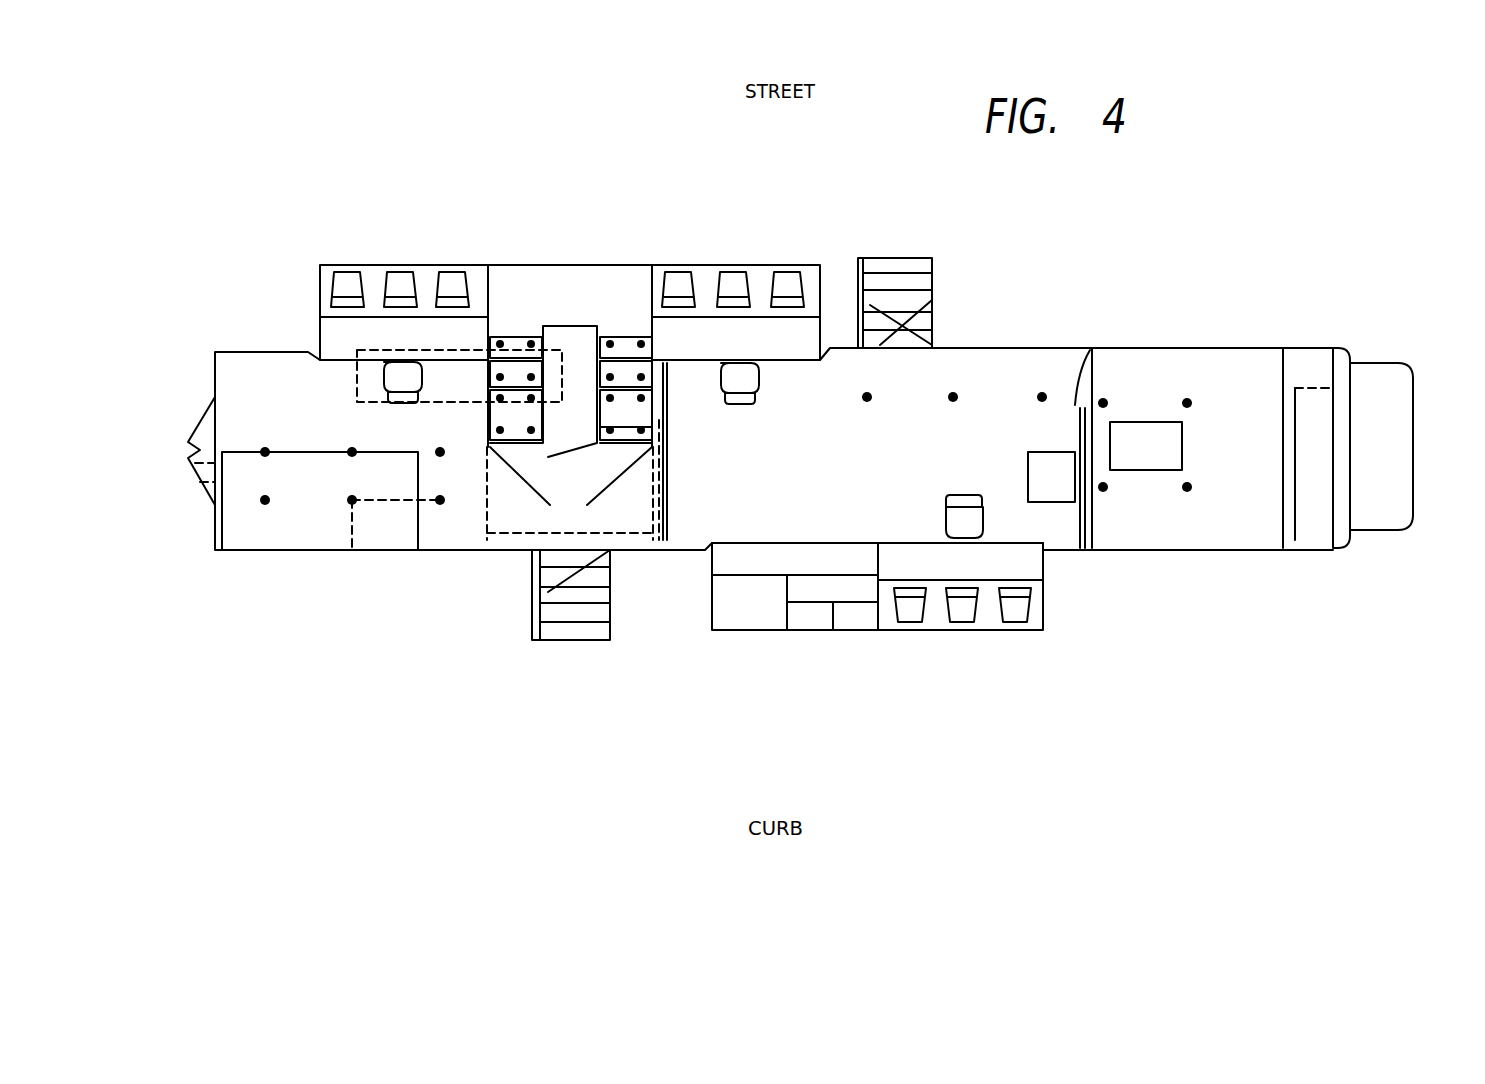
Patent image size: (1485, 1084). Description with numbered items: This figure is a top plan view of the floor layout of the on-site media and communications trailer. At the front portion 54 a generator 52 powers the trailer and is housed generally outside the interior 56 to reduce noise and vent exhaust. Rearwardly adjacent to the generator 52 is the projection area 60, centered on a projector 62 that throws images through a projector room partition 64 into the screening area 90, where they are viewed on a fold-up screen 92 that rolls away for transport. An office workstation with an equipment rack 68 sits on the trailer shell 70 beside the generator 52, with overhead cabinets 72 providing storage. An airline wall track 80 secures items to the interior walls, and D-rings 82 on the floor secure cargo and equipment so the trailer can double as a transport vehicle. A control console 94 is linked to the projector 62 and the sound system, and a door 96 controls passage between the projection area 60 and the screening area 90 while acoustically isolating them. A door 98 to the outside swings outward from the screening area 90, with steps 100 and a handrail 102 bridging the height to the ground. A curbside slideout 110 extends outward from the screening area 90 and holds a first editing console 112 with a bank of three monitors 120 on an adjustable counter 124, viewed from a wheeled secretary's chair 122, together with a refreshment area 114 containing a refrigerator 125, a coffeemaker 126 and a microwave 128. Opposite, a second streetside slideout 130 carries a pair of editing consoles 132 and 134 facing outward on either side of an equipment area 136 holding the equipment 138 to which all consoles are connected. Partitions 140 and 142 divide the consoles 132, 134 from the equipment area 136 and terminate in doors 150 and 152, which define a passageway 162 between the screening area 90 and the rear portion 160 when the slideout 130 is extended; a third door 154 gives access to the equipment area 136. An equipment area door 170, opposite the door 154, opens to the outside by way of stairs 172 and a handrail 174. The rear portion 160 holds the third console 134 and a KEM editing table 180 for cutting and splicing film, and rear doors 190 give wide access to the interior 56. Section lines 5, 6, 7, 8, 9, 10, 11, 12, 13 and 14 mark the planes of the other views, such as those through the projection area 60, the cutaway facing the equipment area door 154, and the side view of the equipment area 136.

The generator 52 is at (1396, 399).
The front portion 54 is at (1305, 600).
The interior 56 is at (915, 412).
The projection area 60 is at (1208, 315).
The projector 62 is at (1182, 448).
The projector room partition 64 is at (1100, 515).
The equipment rack 68 is at (1305, 365).
The trailer shell 70 is at (235, 352).
The overhead cabinets 72 is at (1333, 543).
The airline wall track 80 is at (412, 265).
The D-rings 82 is at (867, 397).
The screening area 90 is at (804, 429).
The fold-up screen 92 is at (668, 478).
The control console 94 is at (1033, 492).
The door 96 is at (1092, 360).
The door 98 is at (932, 302).
The steps 100 is at (935, 262).
The handrail 102 is at (852, 262).
The curbside slideout 110 is at (833, 637).
The first editing console 112 is at (945, 574).
The refreshment area 114 is at (855, 574).
The monitors 120 is at (910, 622).
The secretary's chair 122 is at (945, 520).
The adjustable counter 124 is at (987, 622).
The refrigerator 125 is at (760, 618).
The coffeemaker 126 is at (850, 620).
The microwave 128 is at (806, 622).
The second streetside slideout 130 is at (348, 255).
The editing console 132 is at (800, 351).
The editing console 134 is at (372, 348).
The equipment area 136 is at (604, 301).
The equipment 138 is at (525, 337).
The partition 140 is at (652, 332).
The partition 142 is at (488, 332).
The door 150 is at (620, 473).
The second door 152 is at (517, 477).
The third door 154 is at (565, 457).
The rear portion 160 is at (373, 588).
The passageway 162 is at (613, 517).
The equipment area door 170 is at (575, 585).
The stairs 172 is at (583, 635).
The handrail 174 is at (532, 605).
The KEM editing table 180 is at (336, 528).
The rear doors 190 is at (205, 413).
The section line 5 is at (187, 463).
The section line 6 is at (187, 483).
The section line 7 is at (1230, 348).
The section line 8 is at (1145, 510).
The section line 9 is at (1190, 348).
The section line 10 is at (990, 338).
The section line 11 is at (738, 265).
The section line 12 is at (478, 447).
The section line 13 is at (585, 217).
The section line 14 is at (425, 265).